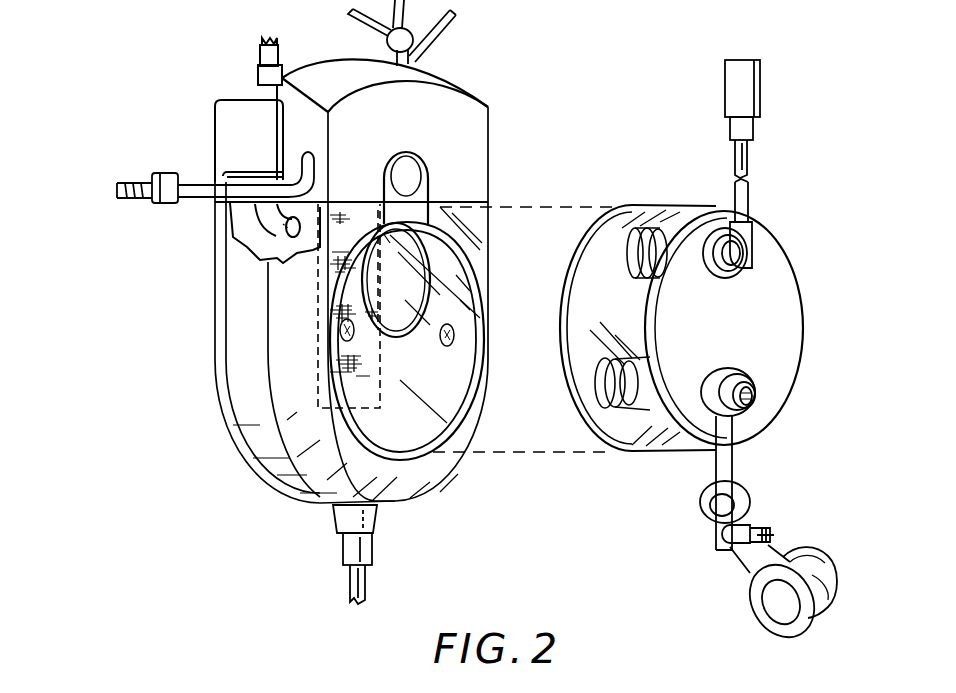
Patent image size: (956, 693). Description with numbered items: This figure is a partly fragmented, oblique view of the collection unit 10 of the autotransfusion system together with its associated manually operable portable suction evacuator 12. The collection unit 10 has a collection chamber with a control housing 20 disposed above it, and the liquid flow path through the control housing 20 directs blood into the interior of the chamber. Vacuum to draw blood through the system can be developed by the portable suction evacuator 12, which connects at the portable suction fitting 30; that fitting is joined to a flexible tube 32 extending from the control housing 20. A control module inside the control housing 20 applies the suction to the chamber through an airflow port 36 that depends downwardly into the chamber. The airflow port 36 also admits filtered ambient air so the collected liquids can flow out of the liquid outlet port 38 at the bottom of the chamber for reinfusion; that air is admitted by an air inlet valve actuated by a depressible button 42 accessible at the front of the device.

The collection unit 10 is at (192, 364).
The manually operable portable suction evacuator 12 is at (820, 382).
The control housing 20 is at (472, 129).
The portable suction fitting 30 is at (158, 172).
The flexible tube 32 is at (197, 182).
The airflow port 36 is at (255, 222).
The liquid outlet port 38 is at (360, 548).
The depressible button 42 is at (408, 175).